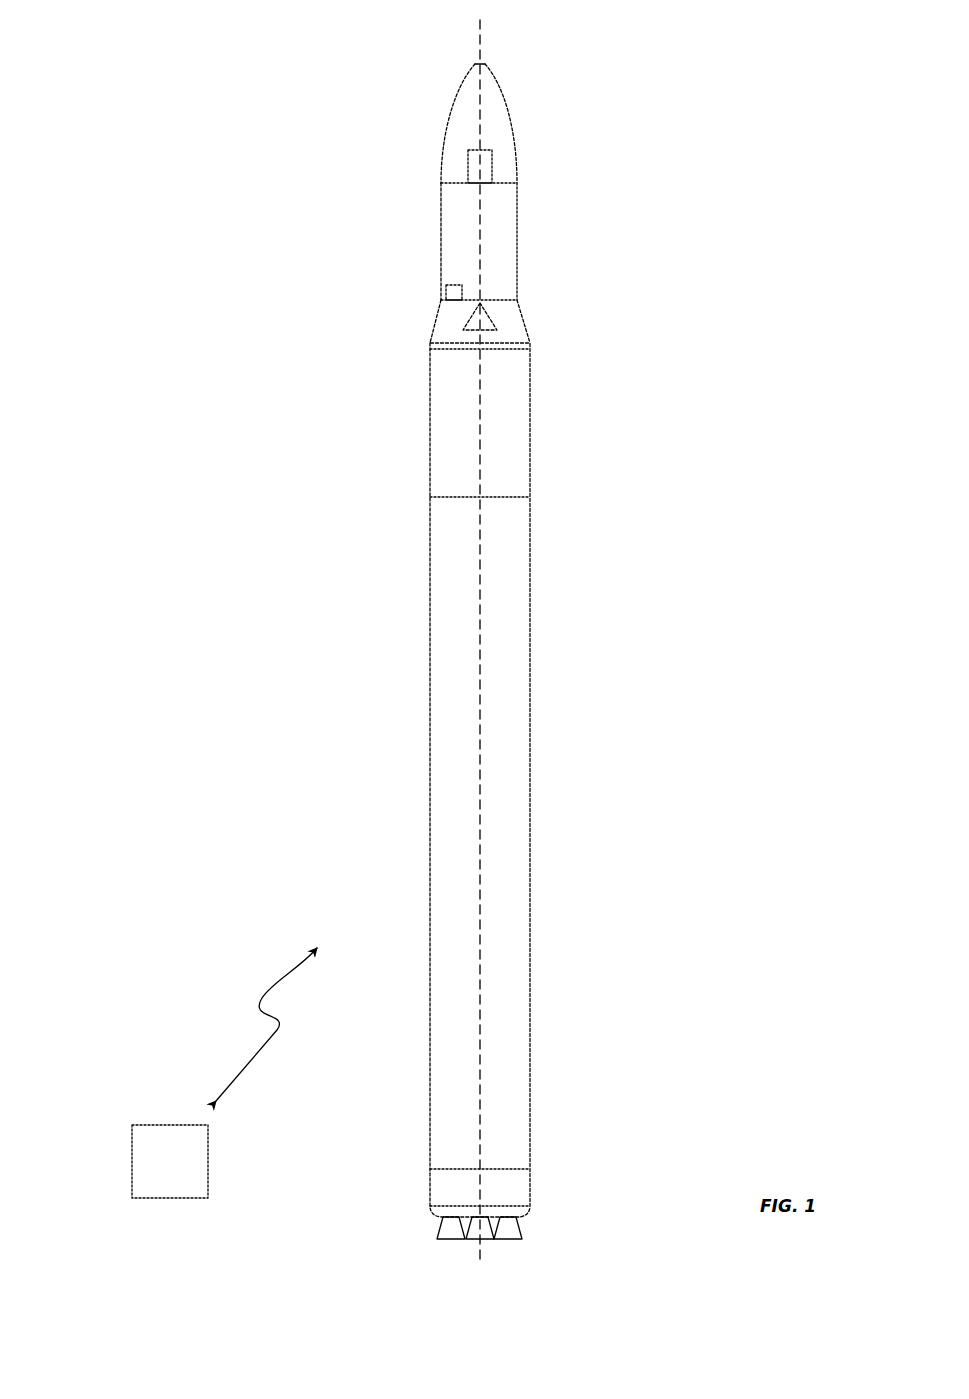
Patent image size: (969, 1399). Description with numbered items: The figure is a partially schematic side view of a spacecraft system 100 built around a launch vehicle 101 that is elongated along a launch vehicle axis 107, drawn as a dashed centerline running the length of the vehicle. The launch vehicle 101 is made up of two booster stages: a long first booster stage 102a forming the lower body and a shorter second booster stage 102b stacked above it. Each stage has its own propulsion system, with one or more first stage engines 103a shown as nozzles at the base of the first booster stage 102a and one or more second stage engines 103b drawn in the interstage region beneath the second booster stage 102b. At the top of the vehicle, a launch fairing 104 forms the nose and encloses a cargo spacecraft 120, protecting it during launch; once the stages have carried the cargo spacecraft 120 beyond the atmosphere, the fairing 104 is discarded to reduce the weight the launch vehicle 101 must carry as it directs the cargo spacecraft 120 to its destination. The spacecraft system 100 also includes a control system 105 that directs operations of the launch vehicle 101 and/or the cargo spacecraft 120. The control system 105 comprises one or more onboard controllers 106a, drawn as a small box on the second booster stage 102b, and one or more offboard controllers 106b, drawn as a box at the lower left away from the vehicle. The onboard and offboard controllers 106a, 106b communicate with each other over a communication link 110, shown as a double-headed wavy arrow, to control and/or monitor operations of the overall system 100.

The spacecraft system 100 is at (334, 74).
The launch vehicle 101 is at (380, 336).
The first booster stage 102a is at (531, 838).
The second booster stage 102b is at (518, 283).
The first stage engines 103a is at (523, 1225).
The second stage engines 103b is at (497, 320).
The launch fairing 104 is at (510, 118).
The control system 105 is at (136, 1064).
The onboard controllers 106a is at (446, 292).
The offboard controllers 106b is at (132, 1160).
The launch vehicle axis 107 is at (481, 37).
The communication link 110 is at (282, 977).
The cargo spacecraft 120 is at (441, 163).